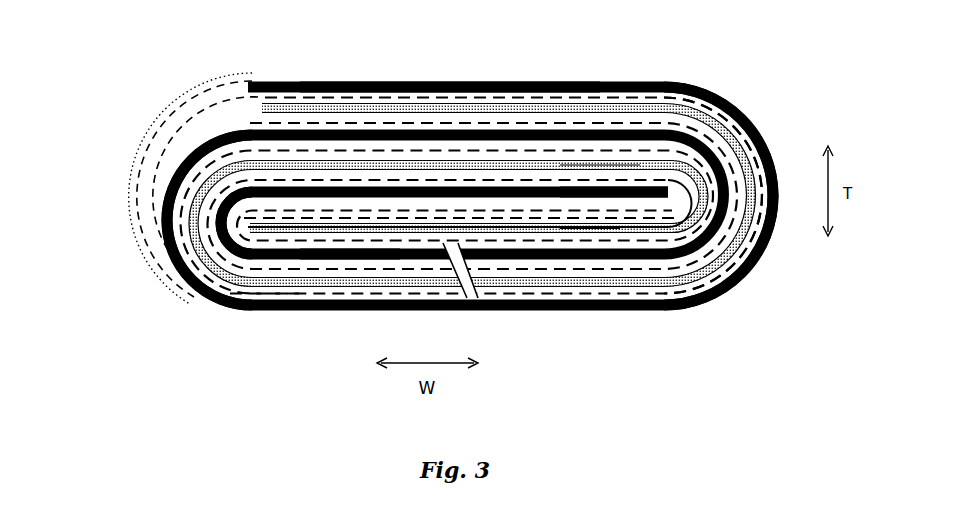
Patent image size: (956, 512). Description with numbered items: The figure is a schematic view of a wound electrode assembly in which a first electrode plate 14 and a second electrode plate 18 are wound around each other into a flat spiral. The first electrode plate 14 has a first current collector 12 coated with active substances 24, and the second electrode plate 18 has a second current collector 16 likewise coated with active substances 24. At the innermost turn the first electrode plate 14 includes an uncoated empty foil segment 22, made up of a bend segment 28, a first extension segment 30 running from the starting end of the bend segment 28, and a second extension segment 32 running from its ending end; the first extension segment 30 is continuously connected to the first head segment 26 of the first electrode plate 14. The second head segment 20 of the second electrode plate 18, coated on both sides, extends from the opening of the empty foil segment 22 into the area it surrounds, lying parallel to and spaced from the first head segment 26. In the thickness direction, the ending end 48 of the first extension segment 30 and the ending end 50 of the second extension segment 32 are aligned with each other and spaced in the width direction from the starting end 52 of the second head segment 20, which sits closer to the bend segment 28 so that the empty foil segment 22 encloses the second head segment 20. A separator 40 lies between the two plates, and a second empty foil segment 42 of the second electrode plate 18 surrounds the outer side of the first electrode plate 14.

The first current collector 12 is at (242, 292).
The first electrode plate 14 is at (210, 172).
The second current collector 16 is at (207, 287).
The second electrode plate 18 is at (210, 215).
The second head segment 20 is at (648, 178).
The empty foil segment 22 is at (690, 250).
The active substances 24 is at (472, 105).
The first head segment 26 is at (334, 237).
The bend segment 28 is at (757, 250).
The first extension segment 30 is at (630, 222).
The second extension segment 32 is at (680, 178).
The separator 40 is at (513, 293).
The second empty foil segment 42 is at (160, 280).
The ending end of the first extension segment 48 is at (588, 225).
The ending end of the second extension segment 50 is at (608, 188).
The starting end of the second head segment 52 is at (722, 160).